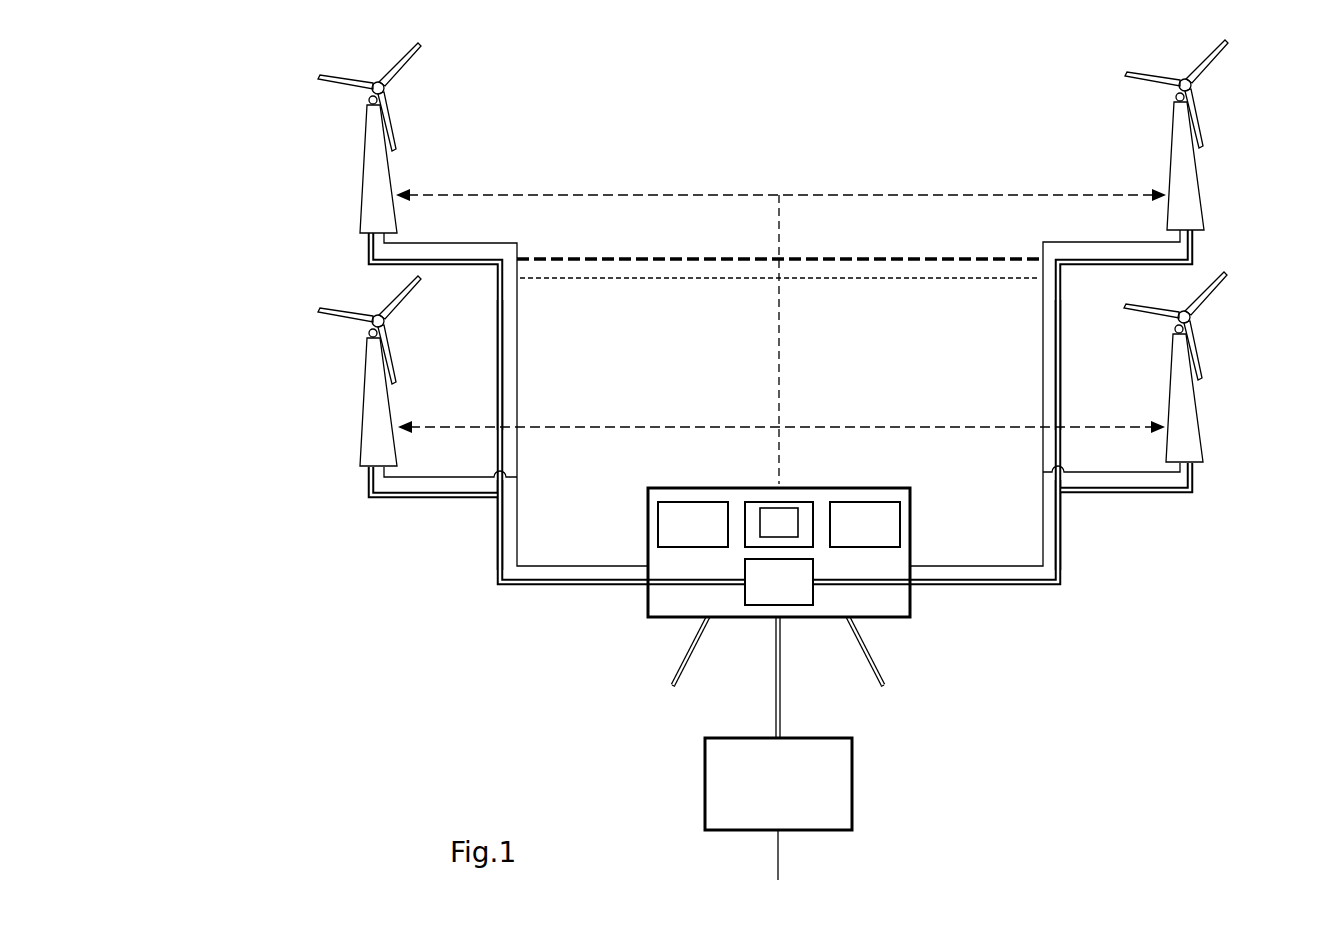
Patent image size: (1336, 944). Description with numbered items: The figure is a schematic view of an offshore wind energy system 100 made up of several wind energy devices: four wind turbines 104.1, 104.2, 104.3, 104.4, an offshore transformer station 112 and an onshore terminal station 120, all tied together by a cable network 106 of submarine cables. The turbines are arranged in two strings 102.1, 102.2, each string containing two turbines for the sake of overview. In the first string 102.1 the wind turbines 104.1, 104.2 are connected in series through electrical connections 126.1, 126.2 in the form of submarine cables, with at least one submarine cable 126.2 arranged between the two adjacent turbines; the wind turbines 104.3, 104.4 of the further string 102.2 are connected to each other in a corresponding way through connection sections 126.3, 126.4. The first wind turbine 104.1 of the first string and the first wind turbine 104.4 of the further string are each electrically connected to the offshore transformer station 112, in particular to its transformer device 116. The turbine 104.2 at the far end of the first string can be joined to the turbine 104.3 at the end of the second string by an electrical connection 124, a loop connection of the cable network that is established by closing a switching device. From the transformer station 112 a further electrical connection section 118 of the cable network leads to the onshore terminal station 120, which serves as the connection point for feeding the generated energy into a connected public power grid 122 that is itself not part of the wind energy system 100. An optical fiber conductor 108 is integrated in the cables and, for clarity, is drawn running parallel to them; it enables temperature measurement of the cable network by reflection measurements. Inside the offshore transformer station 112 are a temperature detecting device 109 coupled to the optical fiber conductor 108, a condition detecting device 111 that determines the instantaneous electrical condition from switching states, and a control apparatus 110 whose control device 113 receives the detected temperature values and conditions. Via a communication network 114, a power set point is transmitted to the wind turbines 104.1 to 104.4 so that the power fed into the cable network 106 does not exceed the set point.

The wind energy system 100 is at (242, 95).
The first string 102.1 is at (438, 580).
The further string 102.2 is at (1122, 576).
The wind turbine 104.1 is at (362, 438).
The wind turbine 104.2 is at (360, 207).
The wind turbine 104.3 is at (1205, 203).
The wind turbine 104.4 is at (1205, 435).
The cable network 106 is at (568, 588).
The optical fiber conductor 108 is at (558, 563).
The temperature detecting device 109 is at (676, 539).
The control apparatus 110 is at (760, 500).
The condition detecting device 111 is at (851, 539).
The offshore transformer station 112 is at (645, 500).
The control device 113 is at (793, 500).
The communication network 114 is at (786, 370).
The transformer device 116 is at (762, 596).
The electrical connection section 118 is at (782, 688).
The onshore terminal station 120 is at (797, 797).
The power grid 122 is at (780, 863).
The electrical connection 124 is at (849, 252).
The electrical connection 126.1 is at (497, 517).
The electrical connection 126.2 is at (498, 365).
The electrical connection 126.3 is at (1063, 512).
The electrical connection 126.4 is at (1062, 370).